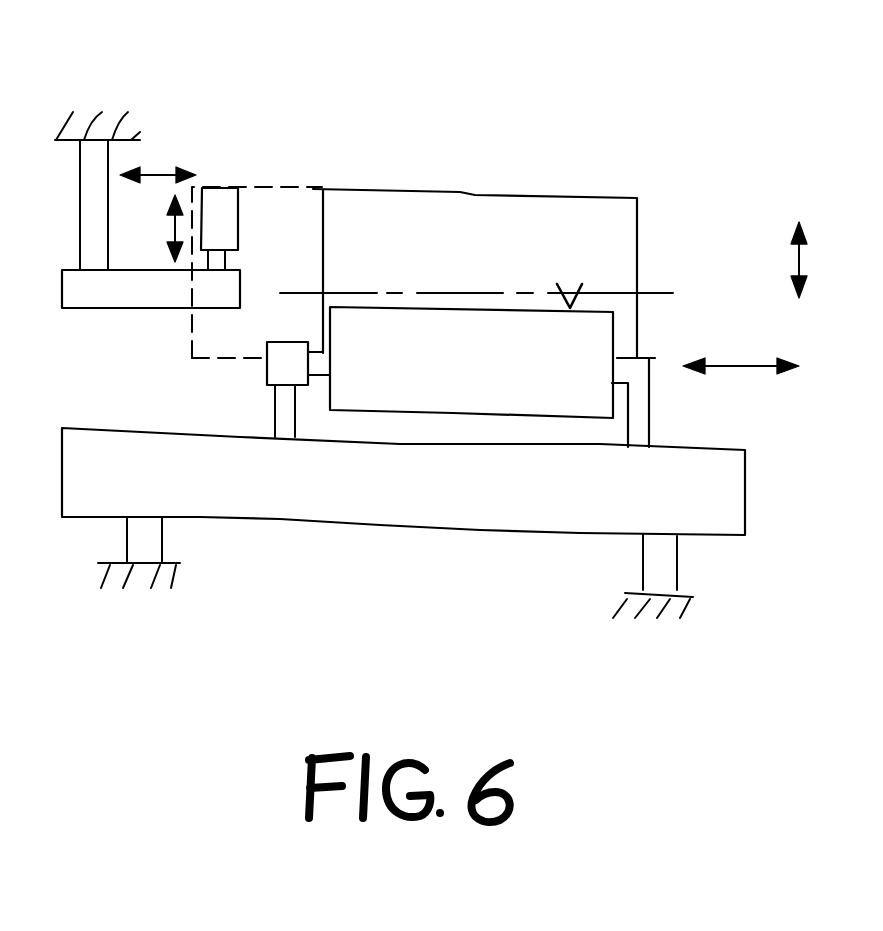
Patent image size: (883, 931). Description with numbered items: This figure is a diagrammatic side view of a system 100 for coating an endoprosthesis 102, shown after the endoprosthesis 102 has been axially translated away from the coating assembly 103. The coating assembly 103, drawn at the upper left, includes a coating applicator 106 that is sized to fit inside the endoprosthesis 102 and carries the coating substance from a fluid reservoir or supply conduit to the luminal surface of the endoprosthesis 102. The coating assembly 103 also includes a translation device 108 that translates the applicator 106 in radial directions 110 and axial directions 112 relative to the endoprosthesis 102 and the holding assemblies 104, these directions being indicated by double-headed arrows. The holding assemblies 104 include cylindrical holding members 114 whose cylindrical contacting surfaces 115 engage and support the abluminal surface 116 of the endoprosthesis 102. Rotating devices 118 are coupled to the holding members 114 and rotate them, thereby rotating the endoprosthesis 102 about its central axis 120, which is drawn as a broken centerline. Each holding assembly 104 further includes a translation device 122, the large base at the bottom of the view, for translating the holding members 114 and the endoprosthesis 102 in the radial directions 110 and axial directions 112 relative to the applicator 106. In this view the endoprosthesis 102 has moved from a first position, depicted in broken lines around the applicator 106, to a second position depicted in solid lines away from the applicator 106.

The system 100 is at (318, 108).
The endoprosthesis 102 is at (636, 248).
The coating assembly 103 is at (190, 136).
The holding assemblies 104 is at (168, 391).
The coating applicator 106 is at (222, 186).
The translation device 108 is at (180, 310).
The radial directions 110 is at (168, 230).
The axial directions 112 is at (158, 177).
The cylindrical holding members 114 is at (614, 335).
The cylindrical contacting surfaces 115 is at (574, 294).
The abluminal surface 116 is at (594, 178).
The rotating devices 118 is at (258, 385).
The central axis 120 is at (472, 288).
The translation device 122 is at (695, 440).